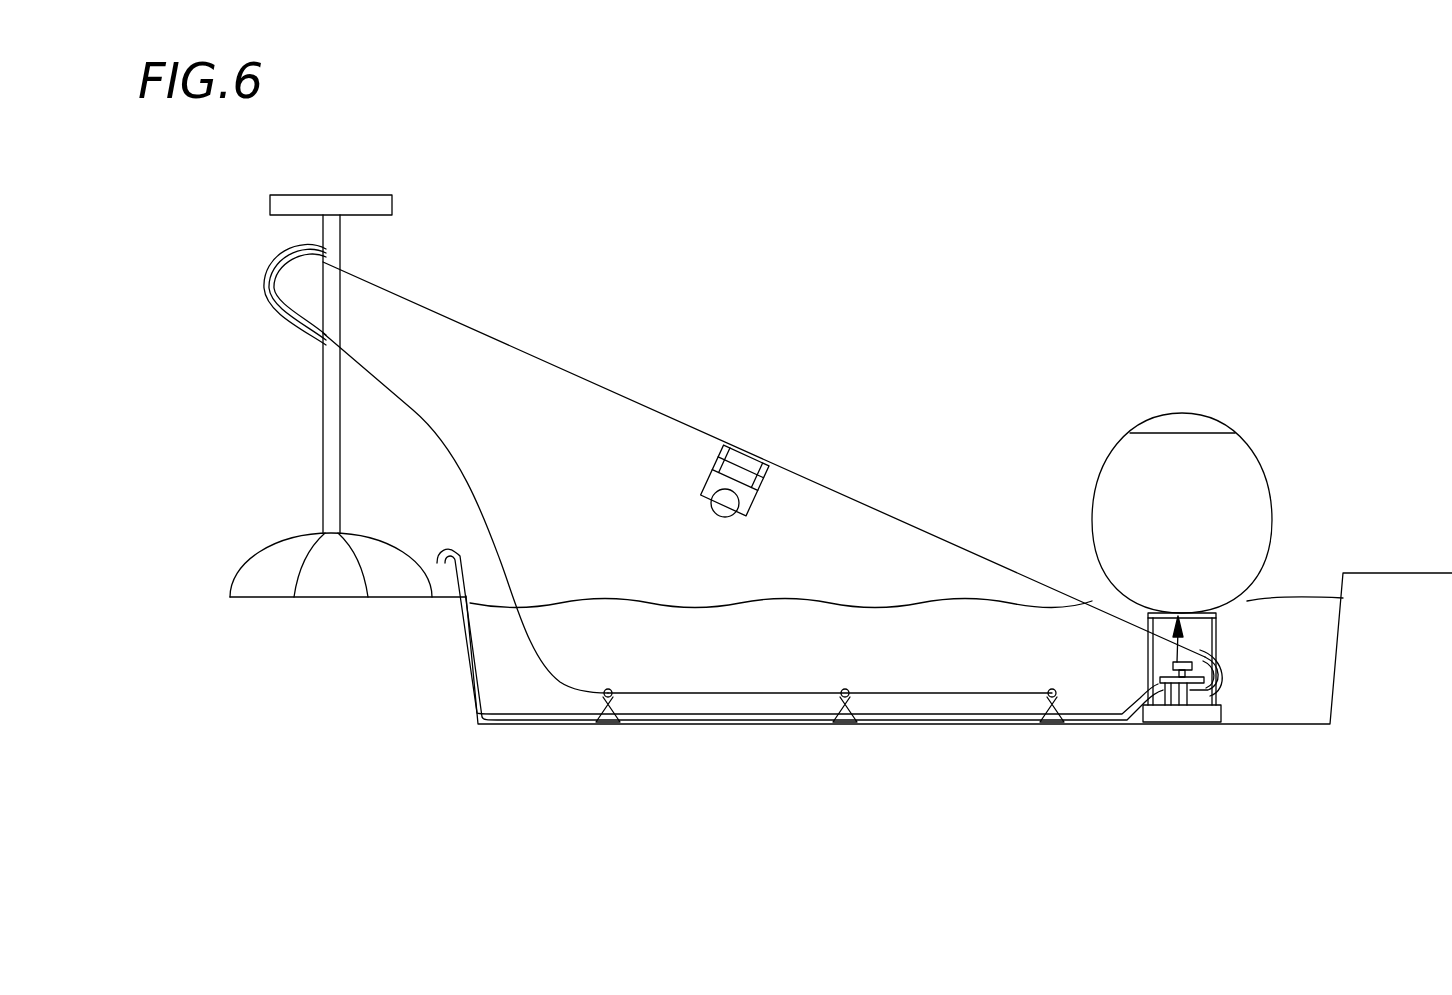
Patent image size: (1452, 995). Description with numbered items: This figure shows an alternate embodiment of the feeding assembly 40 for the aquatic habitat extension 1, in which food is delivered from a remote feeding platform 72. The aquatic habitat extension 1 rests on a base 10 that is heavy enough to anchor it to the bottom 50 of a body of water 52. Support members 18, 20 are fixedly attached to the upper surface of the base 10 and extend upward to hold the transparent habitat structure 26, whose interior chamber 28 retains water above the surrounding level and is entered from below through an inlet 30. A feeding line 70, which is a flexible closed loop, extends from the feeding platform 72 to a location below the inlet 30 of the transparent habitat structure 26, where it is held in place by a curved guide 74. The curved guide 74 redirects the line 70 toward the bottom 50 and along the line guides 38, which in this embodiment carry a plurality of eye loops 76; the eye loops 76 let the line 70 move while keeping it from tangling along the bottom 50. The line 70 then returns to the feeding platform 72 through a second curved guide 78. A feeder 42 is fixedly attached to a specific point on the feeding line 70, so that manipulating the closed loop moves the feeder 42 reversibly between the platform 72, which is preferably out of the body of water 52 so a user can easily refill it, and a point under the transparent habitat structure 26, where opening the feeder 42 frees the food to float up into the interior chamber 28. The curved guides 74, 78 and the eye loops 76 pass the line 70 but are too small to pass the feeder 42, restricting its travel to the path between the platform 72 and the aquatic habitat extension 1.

The aquatic habitat extension 1 is at (1275, 428).
The base 10 is at (1222, 712).
The support member 18 is at (1218, 637).
The support member 20 is at (1147, 647).
The transparent habitat structure 26 is at (1092, 506).
The interior chamber 28 is at (1202, 526).
The inlet 30 is at (1160, 658).
The line guides 38 is at (1048, 690).
The feeding assembly 40 is at (713, 470).
The feeder 42 is at (727, 518).
The bottom 50 is at (548, 728).
The body of water 52 is at (484, 676).
The feeding line 70 is at (814, 476).
The feeding platform 72 is at (322, 492).
The curved guide 74 is at (1222, 670).
The eye loops 76 is at (610, 688).
The curved guide 78 is at (300, 323).